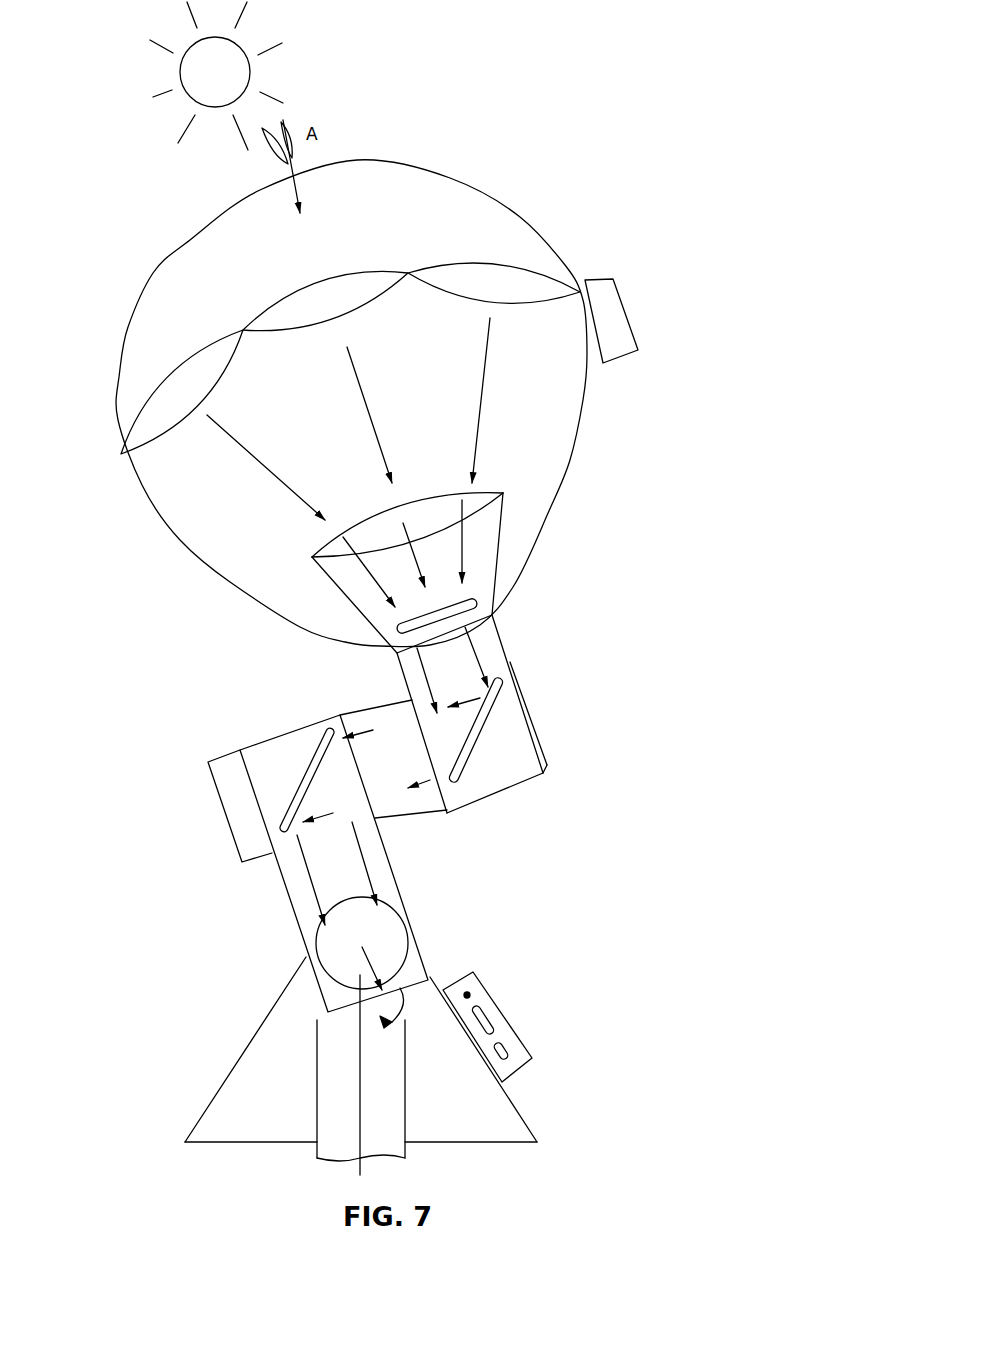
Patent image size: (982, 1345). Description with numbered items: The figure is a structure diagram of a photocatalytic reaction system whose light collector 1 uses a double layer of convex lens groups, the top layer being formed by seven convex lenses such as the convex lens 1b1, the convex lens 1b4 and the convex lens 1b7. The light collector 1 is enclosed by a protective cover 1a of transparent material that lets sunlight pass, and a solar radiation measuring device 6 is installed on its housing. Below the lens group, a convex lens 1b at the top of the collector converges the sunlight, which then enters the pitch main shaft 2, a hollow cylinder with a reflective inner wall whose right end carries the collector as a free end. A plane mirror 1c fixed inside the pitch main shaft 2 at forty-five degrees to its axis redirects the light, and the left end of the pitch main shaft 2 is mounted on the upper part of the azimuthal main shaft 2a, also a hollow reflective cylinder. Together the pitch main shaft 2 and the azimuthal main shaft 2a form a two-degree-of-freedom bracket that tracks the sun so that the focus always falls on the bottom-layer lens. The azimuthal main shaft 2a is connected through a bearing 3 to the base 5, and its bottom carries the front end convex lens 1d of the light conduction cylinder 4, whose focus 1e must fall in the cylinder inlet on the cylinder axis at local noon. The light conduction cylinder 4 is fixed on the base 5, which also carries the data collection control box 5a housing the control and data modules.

The light collector 1 is at (345, 389).
The protective cover 1a is at (520, 217).
The convex lens 1b is at (478, 497).
The convex lens 1b1 is at (182, 392).
The convex lens 1b4 is at (494, 283).
The convex lens 1b7 is at (325, 300).
The plane mirror 1c is at (473, 760).
The front end convex lens 1d is at (467, 995).
The focus 1e is at (390, 1025).
The pitch main shaft 2 is at (253, 792).
The azimuthal main shaft 2a is at (290, 883).
The bearing 3 is at (322, 927).
The light conduction cylinder 4 is at (316, 1020).
The base 5 is at (238, 1068).
The data collection control box 5a is at (477, 977).
The solar radiation measuring device 6 is at (627, 313).